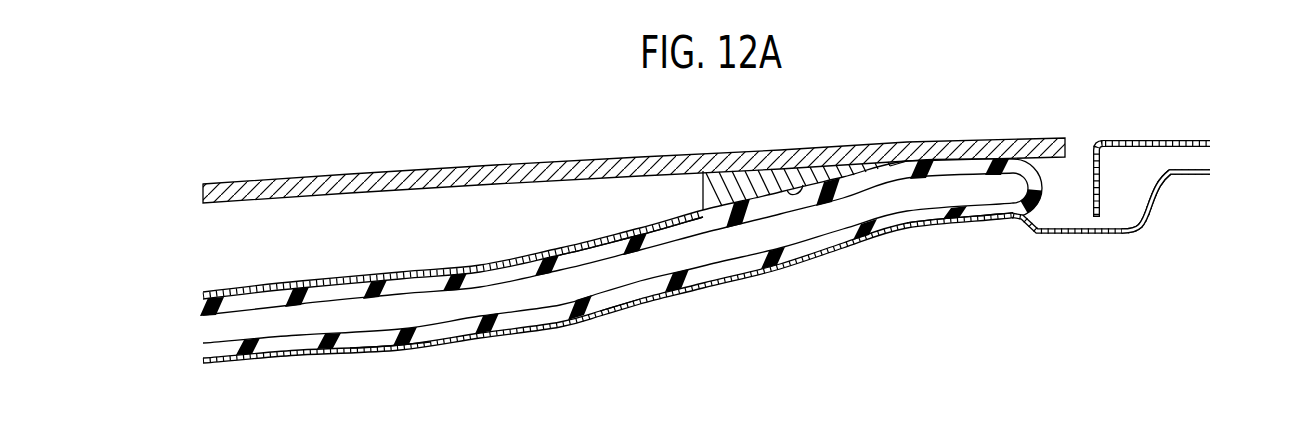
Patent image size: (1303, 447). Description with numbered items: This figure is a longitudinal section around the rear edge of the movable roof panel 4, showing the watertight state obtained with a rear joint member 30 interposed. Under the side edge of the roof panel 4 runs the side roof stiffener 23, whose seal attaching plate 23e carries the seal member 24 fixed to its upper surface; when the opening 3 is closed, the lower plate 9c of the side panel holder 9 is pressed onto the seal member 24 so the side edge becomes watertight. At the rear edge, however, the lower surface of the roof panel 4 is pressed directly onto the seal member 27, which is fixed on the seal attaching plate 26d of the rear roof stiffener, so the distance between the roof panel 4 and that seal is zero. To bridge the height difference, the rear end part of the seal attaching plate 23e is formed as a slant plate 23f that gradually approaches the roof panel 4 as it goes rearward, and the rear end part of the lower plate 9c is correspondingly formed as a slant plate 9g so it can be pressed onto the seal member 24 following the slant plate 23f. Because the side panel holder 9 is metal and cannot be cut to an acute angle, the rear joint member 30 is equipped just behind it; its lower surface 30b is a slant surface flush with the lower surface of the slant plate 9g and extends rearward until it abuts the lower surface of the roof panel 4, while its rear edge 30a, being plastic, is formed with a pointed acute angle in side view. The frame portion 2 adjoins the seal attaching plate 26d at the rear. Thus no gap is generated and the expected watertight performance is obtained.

The door panel 2 is at (1150, 140).
The opening 3 is at (1086, 145).
The roof panel 4 is at (573, 162).
The side panel holder 9 is at (606, 215).
The lower plate 9c is at (255, 291).
The slant plate 9g is at (633, 234).
The side roof stiffener 23 is at (608, 311).
The seal attaching plate 23e is at (384, 356).
The slant plate 23f is at (640, 301).
The seal member 24 is at (288, 348).
The seal attaching plate 26d is at (996, 224).
The seal member 27 is at (1042, 170).
The rear joint member 30 is at (757, 188).
The rear edge 30a is at (905, 159).
The lower surface 30b is at (803, 185).